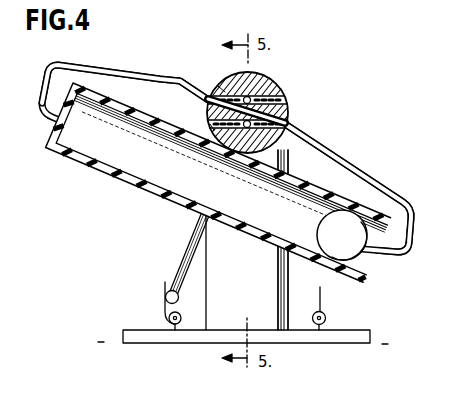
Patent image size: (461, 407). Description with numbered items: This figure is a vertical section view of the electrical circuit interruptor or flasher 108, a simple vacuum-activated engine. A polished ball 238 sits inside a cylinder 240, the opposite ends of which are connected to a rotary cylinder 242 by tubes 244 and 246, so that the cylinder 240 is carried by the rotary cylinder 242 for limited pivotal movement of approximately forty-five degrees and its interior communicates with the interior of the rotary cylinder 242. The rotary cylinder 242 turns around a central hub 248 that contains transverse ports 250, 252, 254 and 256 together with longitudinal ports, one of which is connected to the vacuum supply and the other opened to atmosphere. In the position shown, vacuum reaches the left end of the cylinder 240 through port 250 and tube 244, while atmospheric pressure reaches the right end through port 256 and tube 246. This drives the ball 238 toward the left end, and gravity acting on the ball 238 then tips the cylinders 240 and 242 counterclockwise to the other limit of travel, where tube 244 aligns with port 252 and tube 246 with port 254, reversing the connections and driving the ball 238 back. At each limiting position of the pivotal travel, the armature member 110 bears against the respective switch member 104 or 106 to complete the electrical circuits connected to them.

The switch member 104 is at (321, 289).
The switch member 106 is at (165, 308).
The electrical circuit interruptor or flasher 108 is at (132, 263).
The armature member 110 is at (168, 283).
The polished ball 238 is at (358, 256).
The cylinder 240 is at (97, 170).
The rotary cylinder 242 is at (270, 105).
The tube 244 is at (113, 70).
The tube 246 is at (415, 206).
The central hub 248 is at (276, 91).
The transverse port 250 is at (223, 90).
The transverse port 252 is at (213, 127).
The transverse port 254 is at (290, 110).
The transverse port 256 is at (280, 125).